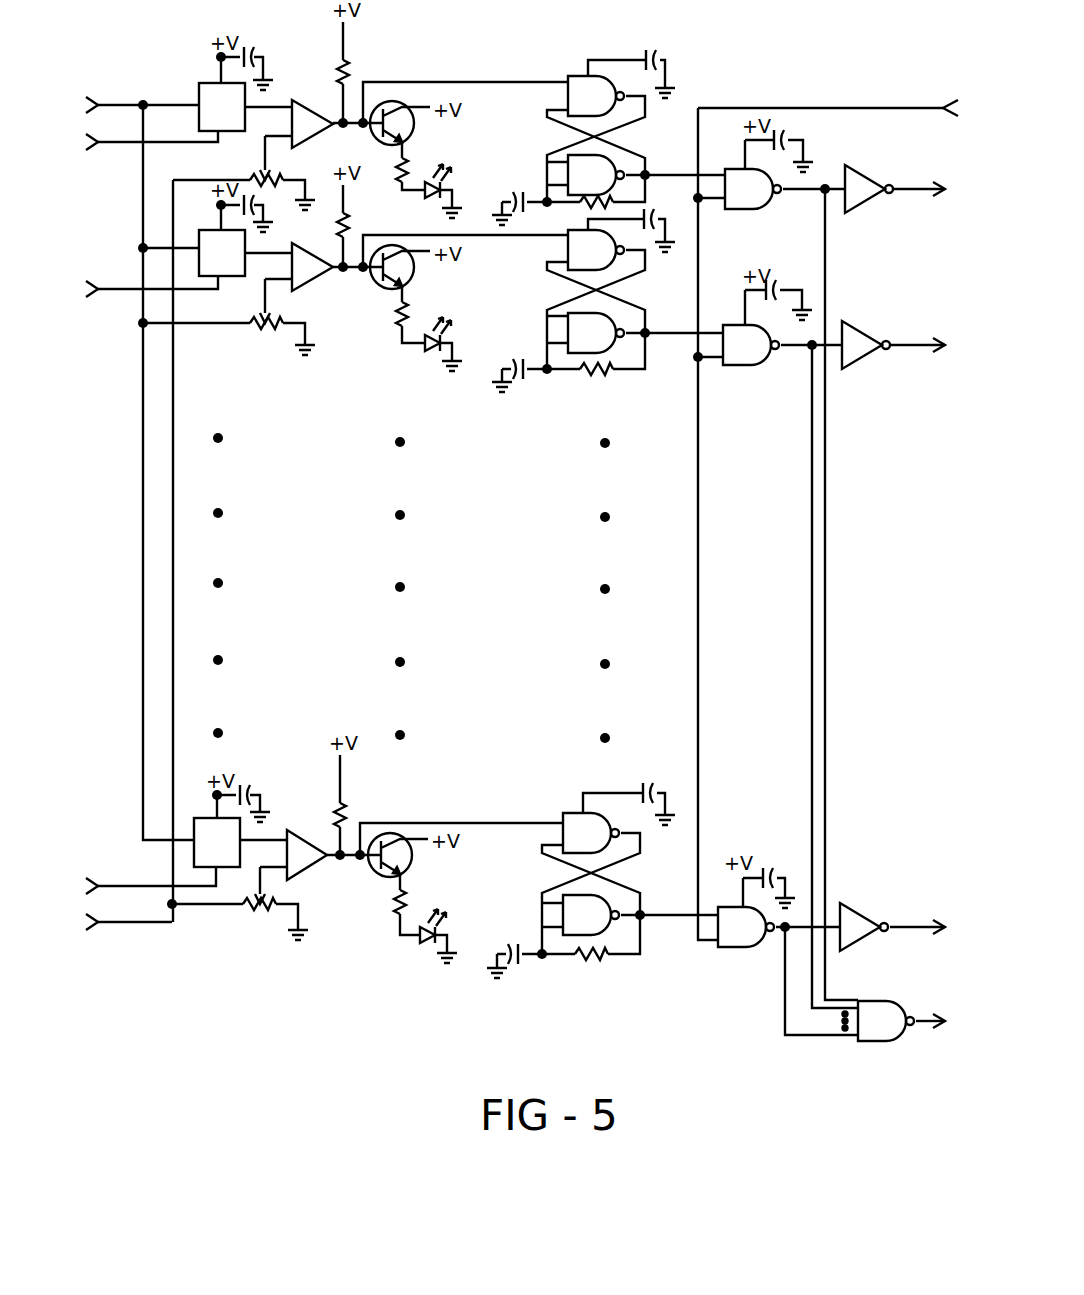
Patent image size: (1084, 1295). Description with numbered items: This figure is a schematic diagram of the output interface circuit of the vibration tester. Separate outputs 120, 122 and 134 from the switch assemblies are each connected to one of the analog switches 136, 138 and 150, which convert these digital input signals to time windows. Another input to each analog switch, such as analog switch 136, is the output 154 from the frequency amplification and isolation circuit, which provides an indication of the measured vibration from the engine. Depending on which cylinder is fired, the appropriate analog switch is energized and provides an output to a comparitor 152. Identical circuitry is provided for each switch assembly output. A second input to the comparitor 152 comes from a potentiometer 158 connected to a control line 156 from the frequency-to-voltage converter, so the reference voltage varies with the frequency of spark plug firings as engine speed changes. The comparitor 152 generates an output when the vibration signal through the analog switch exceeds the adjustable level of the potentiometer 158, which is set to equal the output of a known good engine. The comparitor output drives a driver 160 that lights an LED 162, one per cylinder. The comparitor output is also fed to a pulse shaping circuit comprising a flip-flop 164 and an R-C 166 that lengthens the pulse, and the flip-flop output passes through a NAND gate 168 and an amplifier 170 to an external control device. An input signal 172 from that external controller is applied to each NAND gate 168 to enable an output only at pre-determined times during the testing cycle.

The output from the switch assemblies 120 is at (110, 141).
The output from the switch assemblies 122 is at (108, 288).
The output from the switch assemblies 134 is at (126, 885).
The analog switch 136 is at (201, 90).
The analog switch 138 is at (205, 250).
The analog switch 150 is at (205, 830).
The comparitor 152 is at (294, 98).
The output from the frequency amplification and isolation circuit 154 is at (112, 104).
The control line 156 is at (130, 925).
The potentiometer 158 is at (272, 182).
The driver 160 is at (387, 100).
The LED 162 is at (423, 170).
The flip-flop 164 is at (550, 110).
The R-C 166 is at (646, 197).
The NAND gate 168 is at (740, 182).
The amplifier 170 is at (870, 158).
The input signal 172 is at (770, 108).